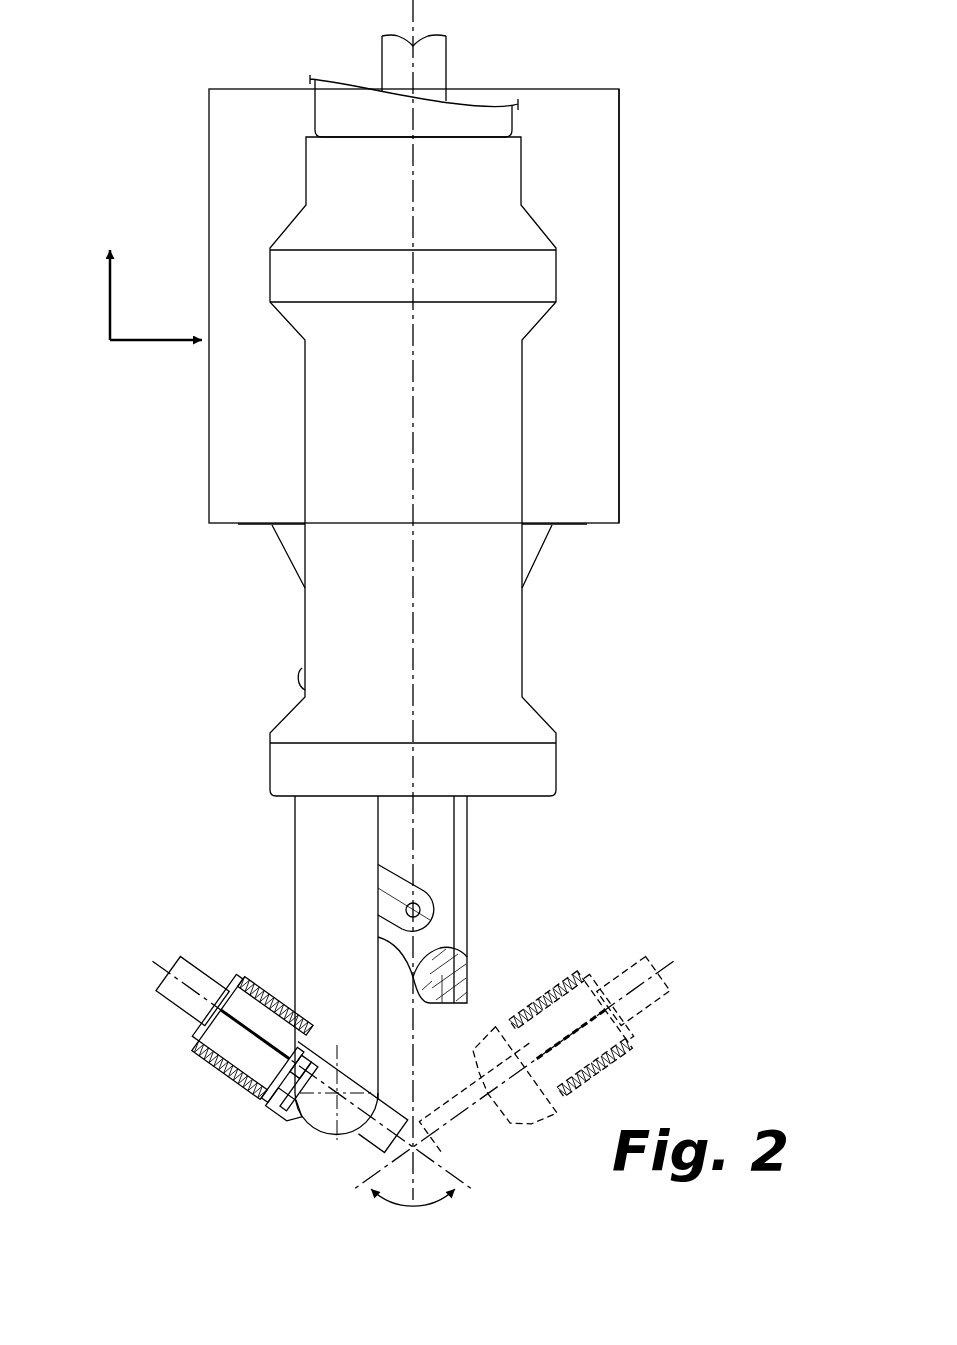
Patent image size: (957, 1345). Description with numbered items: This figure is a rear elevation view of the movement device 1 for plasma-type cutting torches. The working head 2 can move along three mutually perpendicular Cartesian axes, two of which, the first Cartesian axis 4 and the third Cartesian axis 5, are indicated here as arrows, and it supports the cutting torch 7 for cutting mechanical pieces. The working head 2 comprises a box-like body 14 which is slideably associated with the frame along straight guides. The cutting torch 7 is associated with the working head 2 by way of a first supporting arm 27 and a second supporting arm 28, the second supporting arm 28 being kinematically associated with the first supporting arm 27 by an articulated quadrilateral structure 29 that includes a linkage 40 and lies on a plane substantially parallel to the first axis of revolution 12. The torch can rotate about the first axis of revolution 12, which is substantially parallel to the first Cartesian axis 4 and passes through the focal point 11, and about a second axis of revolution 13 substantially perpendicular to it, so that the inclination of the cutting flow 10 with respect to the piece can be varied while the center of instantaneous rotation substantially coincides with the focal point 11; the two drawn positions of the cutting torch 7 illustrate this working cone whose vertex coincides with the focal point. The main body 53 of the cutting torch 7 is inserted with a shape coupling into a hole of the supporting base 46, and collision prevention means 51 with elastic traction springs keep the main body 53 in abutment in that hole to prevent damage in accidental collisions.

The movement device 1 is at (146, 112).
The working head 2 is at (622, 312).
The first Cartesian axis 4 is at (110, 302).
The third Cartesian axis 5 is at (145, 342).
The cutting torch 7 is at (393, 1103).
The cutting flow 10 is at (380, 1095).
The focal point 11 is at (410, 1147).
The first axis of revolution 12 is at (413, 622).
The second axis of revolution 13 is at (340, 1068).
The box-like body 14 is at (622, 425).
The first supporting arm 27 is at (468, 850).
The second supporting arm 28 is at (295, 968).
The articulated quadrilateral structure 29 is at (392, 860).
The linkage 40 is at (378, 893).
The supporting base 46 is at (285, 1108).
The collision prevention means 51 is at (208, 1068).
The main body 53 is at (232, 1005).